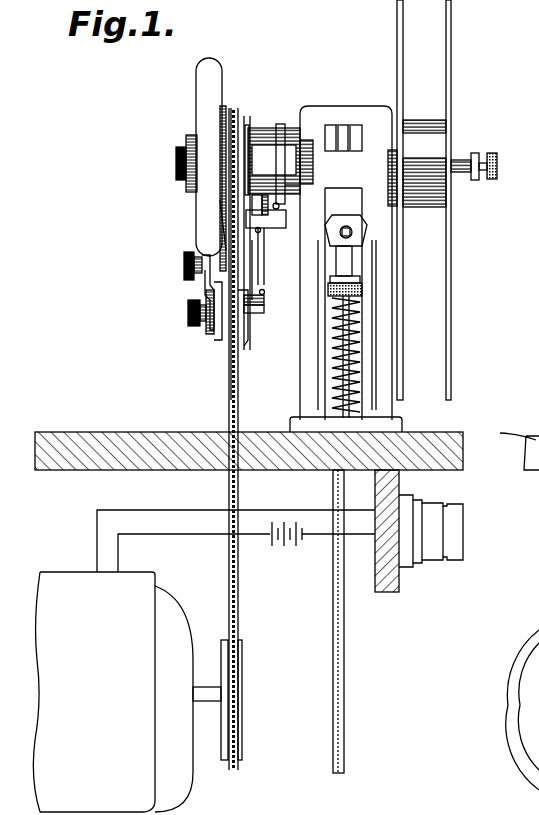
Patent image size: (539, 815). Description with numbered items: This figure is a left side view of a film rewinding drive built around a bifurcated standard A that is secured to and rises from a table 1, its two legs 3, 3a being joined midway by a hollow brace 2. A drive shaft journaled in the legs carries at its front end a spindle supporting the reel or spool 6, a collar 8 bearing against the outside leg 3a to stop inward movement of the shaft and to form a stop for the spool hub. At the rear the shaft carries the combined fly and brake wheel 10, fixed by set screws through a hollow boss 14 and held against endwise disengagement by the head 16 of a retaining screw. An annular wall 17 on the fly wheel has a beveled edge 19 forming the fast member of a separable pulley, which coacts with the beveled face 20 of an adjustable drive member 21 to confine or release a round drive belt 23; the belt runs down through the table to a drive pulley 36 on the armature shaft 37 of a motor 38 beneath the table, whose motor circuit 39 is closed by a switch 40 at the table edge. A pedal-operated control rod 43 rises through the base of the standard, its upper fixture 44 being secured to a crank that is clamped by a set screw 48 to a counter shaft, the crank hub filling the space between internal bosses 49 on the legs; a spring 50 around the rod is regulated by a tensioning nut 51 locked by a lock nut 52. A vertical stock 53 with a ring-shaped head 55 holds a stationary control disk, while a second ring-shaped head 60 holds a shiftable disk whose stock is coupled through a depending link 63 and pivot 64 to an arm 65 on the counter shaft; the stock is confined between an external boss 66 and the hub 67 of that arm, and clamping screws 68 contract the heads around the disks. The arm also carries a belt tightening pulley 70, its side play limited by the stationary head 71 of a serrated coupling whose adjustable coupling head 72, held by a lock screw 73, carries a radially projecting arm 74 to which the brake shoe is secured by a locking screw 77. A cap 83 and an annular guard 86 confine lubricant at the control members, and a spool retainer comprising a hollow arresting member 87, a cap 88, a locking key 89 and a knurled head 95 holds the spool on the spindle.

The table 1 is at (470, 446).
The hollow brace 2 is at (343, 149).
The leg 3 is at (337, 325).
The outside leg 3a is at (371, 325).
The reel or spool 6 is at (451, 72).
The collar 8 is at (400, 136).
The fly wheel 10 is at (197, 102).
The hollow boss 14 is at (188, 136).
The head 16 is at (178, 170).
The annular wall 17 is at (224, 107).
The beveled edge 19 is at (222, 215).
The beveled face 20 is at (238, 115).
The adjustable drive member 21 is at (247, 118).
The drive belt 23 is at (242, 398).
The drive pulley 36 is at (240, 655).
The armature shaft 37 is at (206, 690).
The motor 38 is at (113, 692).
The motor circuit 39 is at (170, 510).
The switch 40 is at (462, 520).
The control rod 43 is at (356, 365).
The fixture 44 is at (352, 262).
The set screw 48 is at (352, 236).
The internal bosses 49 is at (356, 214).
The spring 50 is at (345, 140).
The tensioning nut 51 is at (362, 290).
The lock nut 52 is at (360, 280).
The vertical stock 53 is at (290, 186).
The ring-shaped head 55 is at (281, 124).
The ring-shaped head 60 is at (274, 161).
The depending link 63 is at (265, 258).
The pivot 64 is at (264, 296).
The arm 65 is at (256, 288).
The external boss 66 is at (296, 226).
The hub 67 is at (252, 207).
The clamping screws 68 is at (279, 205).
The belt tightening pulley 70 is at (244, 340).
The stationary head 71 is at (218, 340).
The adjustable coupling head 72 is at (208, 334).
The lock screw 73 is at (190, 326).
The radially projecting arm 74 is at (204, 290).
The locking screw 77 is at (184, 262).
The cap 83 is at (306, 142).
The annular guard 86 is at (249, 128).
The arresting member 87 is at (462, 160).
The cap 88 is at (480, 174).
The locking key 89 is at (483, 163).
The knurled head 95 is at (497, 156).
The standard A is at (344, 107).